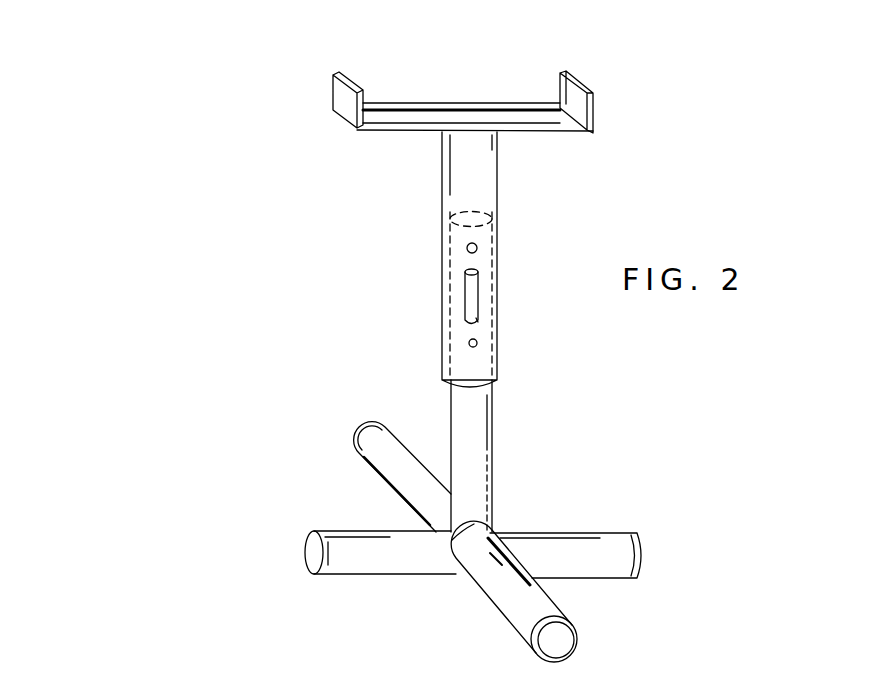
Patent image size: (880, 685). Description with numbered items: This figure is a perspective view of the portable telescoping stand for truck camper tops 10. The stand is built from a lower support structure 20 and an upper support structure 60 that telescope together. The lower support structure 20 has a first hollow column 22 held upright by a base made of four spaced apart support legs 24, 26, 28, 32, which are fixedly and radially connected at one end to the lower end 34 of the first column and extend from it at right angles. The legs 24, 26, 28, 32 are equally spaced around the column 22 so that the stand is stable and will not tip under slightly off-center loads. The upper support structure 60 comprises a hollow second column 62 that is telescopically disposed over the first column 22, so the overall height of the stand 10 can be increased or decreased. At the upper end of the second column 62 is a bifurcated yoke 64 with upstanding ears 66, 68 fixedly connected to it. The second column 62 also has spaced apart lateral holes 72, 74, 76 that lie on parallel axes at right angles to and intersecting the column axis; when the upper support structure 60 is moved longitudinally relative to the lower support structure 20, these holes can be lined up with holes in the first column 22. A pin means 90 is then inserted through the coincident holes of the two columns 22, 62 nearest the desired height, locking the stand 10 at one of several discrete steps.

The portable telescoping stand for truck camper tops 10 is at (288, 200).
The lower support structure 20 is at (518, 485).
The first hollow column 22 is at (472, 438).
The support leg 24 is at (390, 467).
The support leg 26 is at (373, 562).
The support leg 28 is at (522, 612).
The support leg 32 is at (585, 562).
The lower end of the first column 34 is at (470, 527).
The upper support structure 60 is at (513, 153).
The hollow second column 62 is at (463, 155).
The bifurcated yoke 64 is at (410, 112).
The upstanding ear 66 is at (575, 95).
The upstanding ear 68 is at (340, 97).
The lateral hole 72 is at (468, 248).
The lateral hole 74 is at (478, 322).
The lateral hole 76 is at (470, 344).
The pin means 90 is at (464, 297).